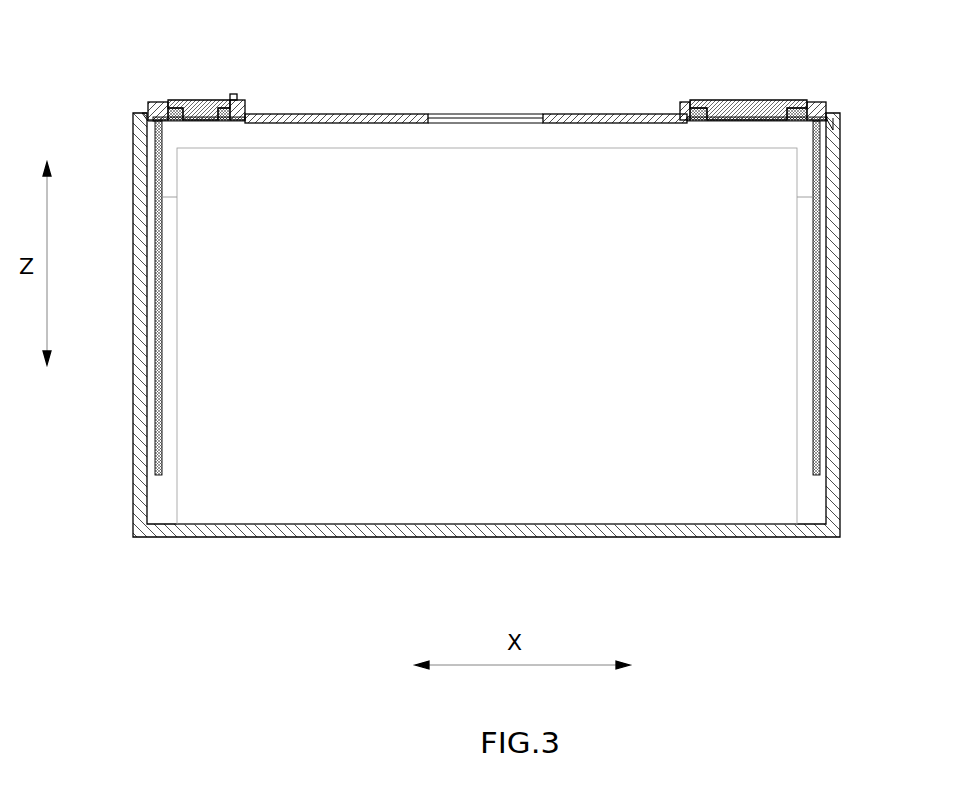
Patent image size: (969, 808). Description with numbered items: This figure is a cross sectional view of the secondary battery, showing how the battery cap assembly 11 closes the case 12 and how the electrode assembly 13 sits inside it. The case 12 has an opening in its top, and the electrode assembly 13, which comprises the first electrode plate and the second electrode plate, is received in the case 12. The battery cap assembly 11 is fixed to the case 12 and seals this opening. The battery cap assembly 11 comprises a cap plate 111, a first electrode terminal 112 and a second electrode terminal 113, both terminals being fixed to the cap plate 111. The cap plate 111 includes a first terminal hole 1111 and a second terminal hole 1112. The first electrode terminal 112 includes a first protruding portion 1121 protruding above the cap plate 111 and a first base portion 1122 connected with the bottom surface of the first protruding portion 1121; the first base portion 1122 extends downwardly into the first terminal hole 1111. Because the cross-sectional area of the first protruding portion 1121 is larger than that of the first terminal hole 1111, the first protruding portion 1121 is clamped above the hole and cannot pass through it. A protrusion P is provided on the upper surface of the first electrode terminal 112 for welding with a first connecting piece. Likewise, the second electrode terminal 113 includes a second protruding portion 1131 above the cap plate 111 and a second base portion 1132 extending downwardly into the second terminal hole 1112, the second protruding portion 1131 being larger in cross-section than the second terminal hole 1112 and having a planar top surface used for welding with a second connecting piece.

The battery cap assembly 11 is at (478, 80).
The cap plate 111 is at (457, 102).
The first terminal hole 1111 is at (328, 131).
The second terminal hole 1112 is at (615, 131).
The first electrode terminal 112 is at (204, 73).
The first protruding portion 1121 is at (163, 102).
The first base portion 1122 is at (205, 100).
The protrusion P is at (237, 96).
The second electrode terminal 113 is at (739, 73).
The second protruding portion 1131 is at (695, 102).
The second base portion 1132 is at (722, 112).
The case 12 is at (833, 340).
The electrode assembly 13 is at (513, 508).